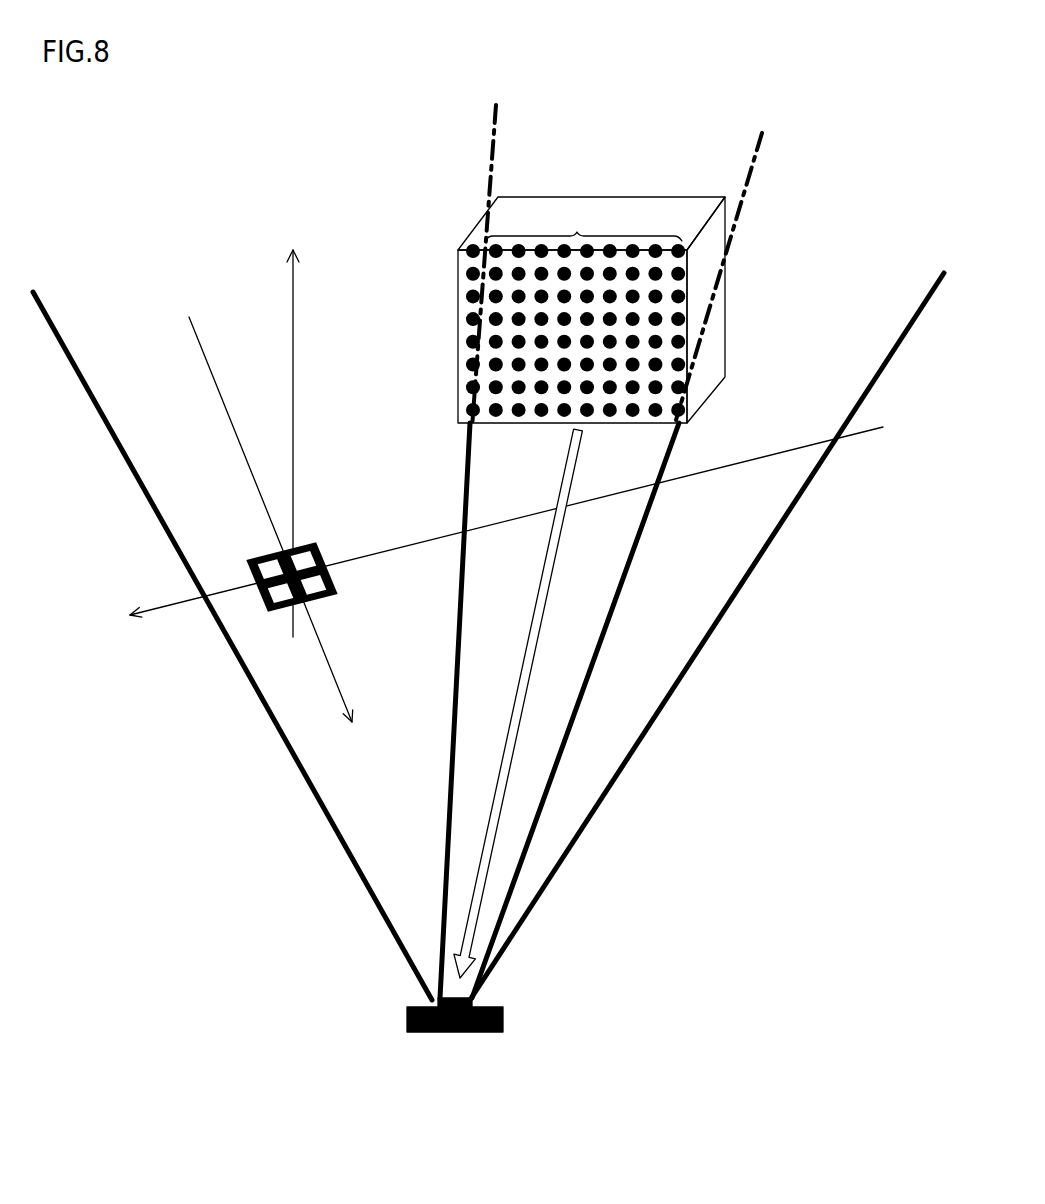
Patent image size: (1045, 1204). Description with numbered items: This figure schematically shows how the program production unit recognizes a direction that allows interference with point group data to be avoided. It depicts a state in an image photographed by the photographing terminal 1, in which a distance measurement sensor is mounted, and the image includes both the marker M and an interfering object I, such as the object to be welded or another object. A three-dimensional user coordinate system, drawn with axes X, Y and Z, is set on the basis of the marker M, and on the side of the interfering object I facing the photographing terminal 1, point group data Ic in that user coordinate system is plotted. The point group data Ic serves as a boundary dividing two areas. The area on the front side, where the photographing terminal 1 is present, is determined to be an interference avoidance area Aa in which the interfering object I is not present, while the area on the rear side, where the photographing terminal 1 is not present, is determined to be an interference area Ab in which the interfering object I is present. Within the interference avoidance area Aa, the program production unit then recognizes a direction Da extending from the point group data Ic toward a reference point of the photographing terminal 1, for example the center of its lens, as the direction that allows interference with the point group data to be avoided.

The photographing terminal 1 is at (505, 1019).
The interfering object I is at (539, 195).
The point group data Ic is at (583, 220).
The interference area Ab is at (615, 154).
The interference avoidance area Aa is at (526, 540).
The direction Da is at (570, 458).
The marker M is at (335, 590).
The X axis X is at (483, 546).
The Y axis Y is at (280, 559).
The Z axis Z is at (293, 412).